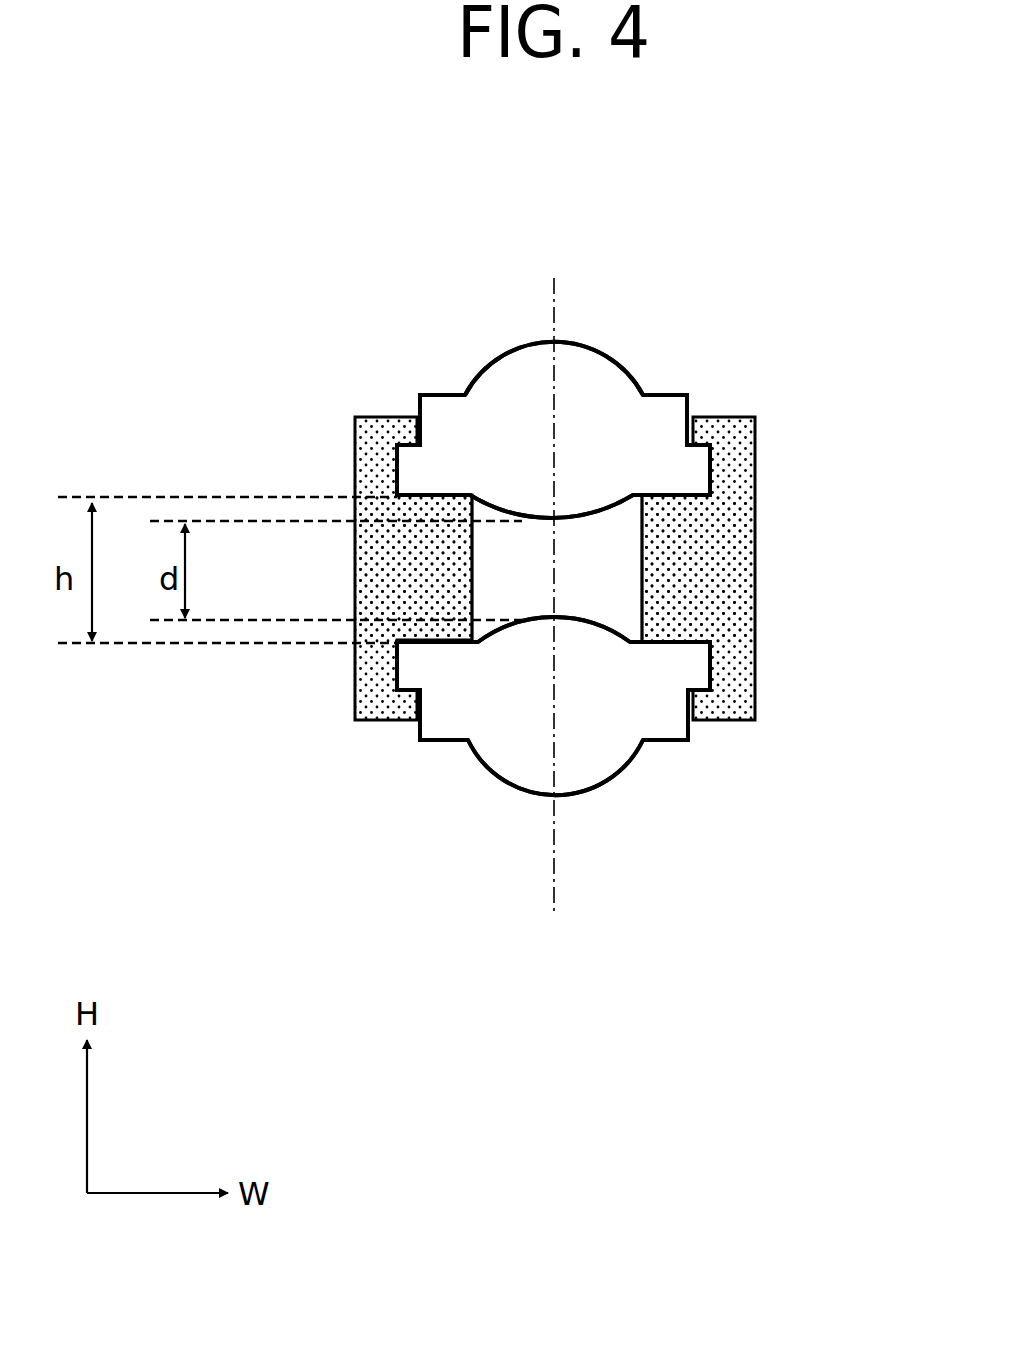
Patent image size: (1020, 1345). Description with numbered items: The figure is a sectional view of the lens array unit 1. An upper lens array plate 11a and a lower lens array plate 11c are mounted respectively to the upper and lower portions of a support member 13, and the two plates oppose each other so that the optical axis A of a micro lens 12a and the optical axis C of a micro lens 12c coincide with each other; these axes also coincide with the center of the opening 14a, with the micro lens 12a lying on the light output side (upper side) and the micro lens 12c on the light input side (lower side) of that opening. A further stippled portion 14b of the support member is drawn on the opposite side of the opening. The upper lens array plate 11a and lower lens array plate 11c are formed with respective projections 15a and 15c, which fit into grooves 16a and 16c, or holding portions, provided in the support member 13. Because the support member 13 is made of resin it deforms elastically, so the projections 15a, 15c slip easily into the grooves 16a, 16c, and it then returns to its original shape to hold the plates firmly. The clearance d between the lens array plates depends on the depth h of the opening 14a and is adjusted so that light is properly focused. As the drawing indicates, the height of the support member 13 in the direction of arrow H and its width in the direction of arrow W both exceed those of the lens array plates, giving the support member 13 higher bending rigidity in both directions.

The lens array unit 1 is at (372, 304).
The upper lens array plate 11a is at (670, 410).
The lower lens array plate 11c is at (667, 727).
The micro lens 12a is at (598, 372).
The micro lens 12c is at (600, 770).
The support member 13 is at (757, 587).
The opening 14a is at (493, 567).
The second spacer portion 14b is at (695, 542).
The projection 15a is at (702, 463).
The projection 15c is at (692, 657).
The groove 16a is at (703, 483).
The groove 16c is at (710, 673).